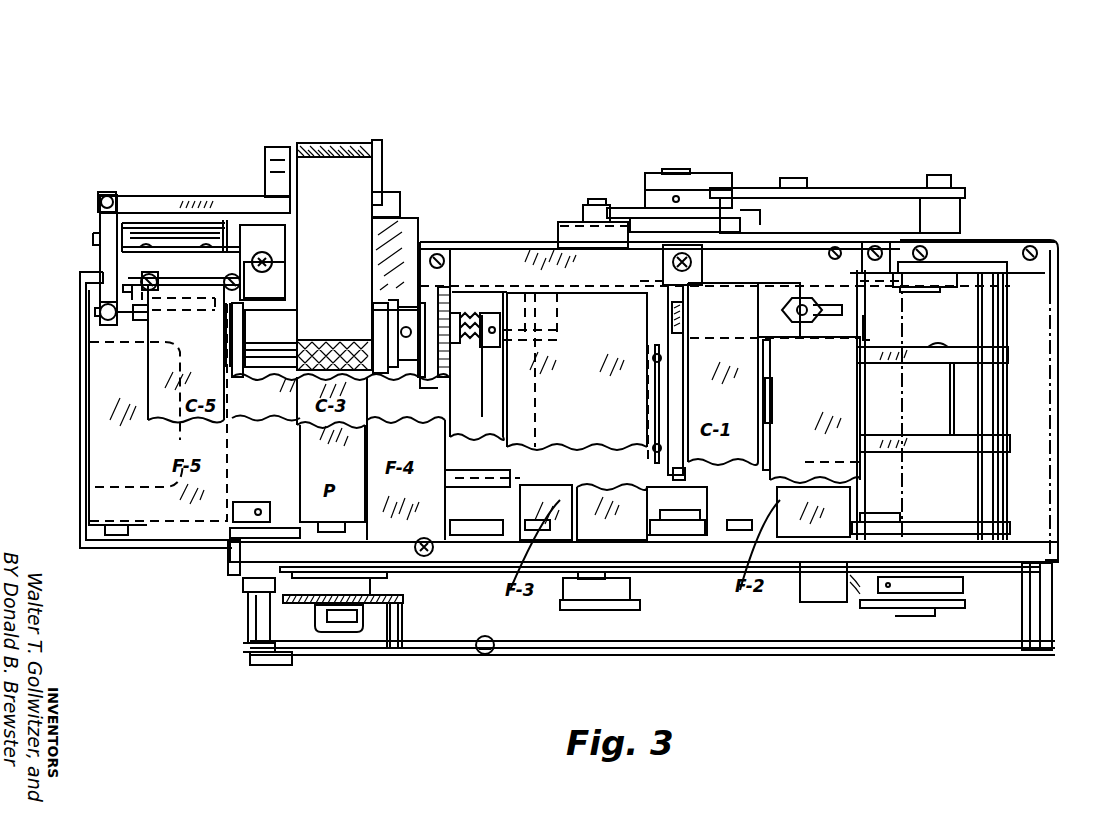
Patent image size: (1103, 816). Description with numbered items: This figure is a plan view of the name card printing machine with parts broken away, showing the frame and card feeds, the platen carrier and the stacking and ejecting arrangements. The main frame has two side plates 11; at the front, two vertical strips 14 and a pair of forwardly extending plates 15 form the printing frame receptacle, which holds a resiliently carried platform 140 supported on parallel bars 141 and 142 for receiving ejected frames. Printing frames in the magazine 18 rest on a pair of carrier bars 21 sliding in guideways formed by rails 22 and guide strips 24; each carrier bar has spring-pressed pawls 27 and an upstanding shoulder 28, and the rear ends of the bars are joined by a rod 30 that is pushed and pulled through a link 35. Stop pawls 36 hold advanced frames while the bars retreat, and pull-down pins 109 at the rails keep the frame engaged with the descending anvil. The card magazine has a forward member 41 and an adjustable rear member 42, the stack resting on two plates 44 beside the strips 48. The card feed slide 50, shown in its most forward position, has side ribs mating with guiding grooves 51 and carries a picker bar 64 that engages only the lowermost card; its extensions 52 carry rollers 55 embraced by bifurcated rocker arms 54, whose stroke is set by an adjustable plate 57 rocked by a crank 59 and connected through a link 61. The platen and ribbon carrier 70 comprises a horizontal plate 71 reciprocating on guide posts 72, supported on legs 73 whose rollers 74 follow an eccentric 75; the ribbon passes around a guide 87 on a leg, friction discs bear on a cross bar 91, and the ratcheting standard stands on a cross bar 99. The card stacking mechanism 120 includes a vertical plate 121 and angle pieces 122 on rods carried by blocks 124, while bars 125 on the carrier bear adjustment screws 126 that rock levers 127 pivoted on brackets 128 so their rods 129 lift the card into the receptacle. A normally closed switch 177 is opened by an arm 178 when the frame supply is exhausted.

The side plates 11 is at (495, 246).
The vertical strips 14 is at (227, 560).
The forwardly extending plates 15 is at (78, 273).
The magazine 18 is at (1015, 250).
The carrier bars 21 is at (980, 260).
The rails 22 is at (480, 566).
The guide strips 24 is at (272, 524).
The spring-pressed pawls 27 is at (282, 542).
The upstanding shoulder 28 is at (870, 514).
The rod 30 is at (990, 322).
The link 35 is at (964, 452).
The stop pawls 36 is at (912, 294).
The forward member 41 is at (686, 292).
The adjustable rear member 42 is at (756, 318).
The plates 44 is at (499, 466).
The strips 48 is at (510, 256).
The card feed slide 50 is at (577, 381).
The guiding grooves 51 is at (530, 332).
The extensions 52 is at (557, 222).
The rocker arms 54 is at (626, 208).
The rollers 55 is at (586, 206).
The adjustable plate 57 is at (858, 188).
The crank 59 is at (702, 176).
The link 61 is at (743, 204).
The picker bar 64 is at (648, 382).
The platen and ribbon carrier 70 is at (414, 173).
The horizontal plate 71 is at (406, 226).
The guide posts 72 is at (260, 254).
The legs 73 is at (401, 604).
The rollers 74 is at (341, 612).
The eccentric 75 is at (368, 618).
The guide 87 is at (382, 148).
The cross bar 91 is at (485, 313).
The cross bar 99 is at (442, 252).
The pull-down pins 109 is at (422, 557).
The card stacking mechanism 120 is at (91, 242).
The vertical plate 121 is at (227, 282).
The angle pieces 122 is at (140, 276).
The blocks 124 is at (270, 314).
The bars 125 is at (218, 194).
The adjustment screws 126 is at (104, 196).
The levers 127 is at (98, 226).
The brackets 128 is at (126, 226).
The rods 129 is at (95, 312).
The platform 140 is at (110, 484).
The bar 141 is at (547, 650).
The bar 142 is at (553, 640).
The normally closed switch 177 is at (830, 606).
The arm 178 is at (911, 594).